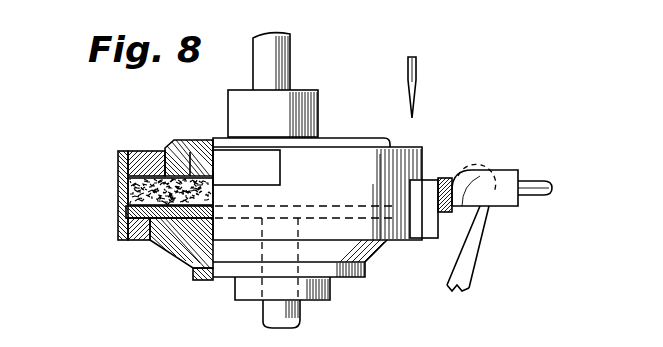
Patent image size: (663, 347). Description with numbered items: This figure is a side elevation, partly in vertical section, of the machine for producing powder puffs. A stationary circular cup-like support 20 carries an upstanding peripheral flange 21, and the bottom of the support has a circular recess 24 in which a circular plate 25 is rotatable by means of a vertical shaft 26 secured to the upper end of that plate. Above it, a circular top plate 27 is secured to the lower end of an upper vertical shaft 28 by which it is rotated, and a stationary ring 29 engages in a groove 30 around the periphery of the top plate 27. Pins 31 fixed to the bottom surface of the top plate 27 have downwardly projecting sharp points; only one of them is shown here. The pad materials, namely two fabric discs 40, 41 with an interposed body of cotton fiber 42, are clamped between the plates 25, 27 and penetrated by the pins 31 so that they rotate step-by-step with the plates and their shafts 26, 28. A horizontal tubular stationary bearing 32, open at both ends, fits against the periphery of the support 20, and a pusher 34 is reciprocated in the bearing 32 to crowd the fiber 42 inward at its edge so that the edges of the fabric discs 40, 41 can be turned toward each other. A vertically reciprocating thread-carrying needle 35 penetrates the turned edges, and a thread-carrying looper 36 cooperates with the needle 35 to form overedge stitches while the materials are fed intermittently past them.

The stationary circular cup-like support 20 is at (168, 245).
The upstanding peripheral flange 21 is at (125, 149).
The circular recess 24 is at (188, 240).
The circular plate 25 is at (201, 282).
The vertical shaft 26 is at (302, 312).
The circular top plate 27 is at (203, 147).
The upper vertical shaft 28 is at (281, 62).
The stationary ring 29 is at (148, 150).
The groove 30 is at (184, 147).
The pins 31 is at (214, 165).
The horizontal tubular stationary bearing 32 is at (504, 200).
The pusher 34 is at (546, 197).
The needle 35 is at (418, 69).
The looper 36 is at (469, 270).
The fabric disc 40 is at (128, 185).
The fabric disc 41 is at (123, 243).
The body of fiber 42 is at (128, 208).